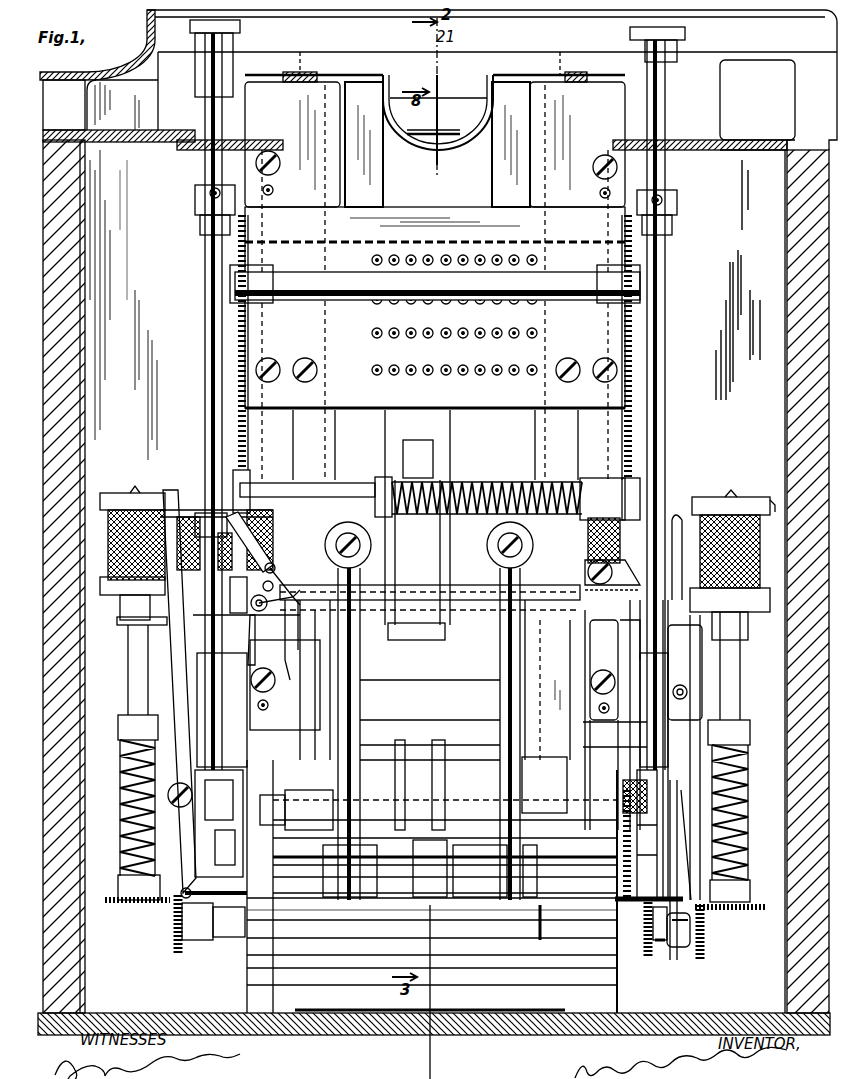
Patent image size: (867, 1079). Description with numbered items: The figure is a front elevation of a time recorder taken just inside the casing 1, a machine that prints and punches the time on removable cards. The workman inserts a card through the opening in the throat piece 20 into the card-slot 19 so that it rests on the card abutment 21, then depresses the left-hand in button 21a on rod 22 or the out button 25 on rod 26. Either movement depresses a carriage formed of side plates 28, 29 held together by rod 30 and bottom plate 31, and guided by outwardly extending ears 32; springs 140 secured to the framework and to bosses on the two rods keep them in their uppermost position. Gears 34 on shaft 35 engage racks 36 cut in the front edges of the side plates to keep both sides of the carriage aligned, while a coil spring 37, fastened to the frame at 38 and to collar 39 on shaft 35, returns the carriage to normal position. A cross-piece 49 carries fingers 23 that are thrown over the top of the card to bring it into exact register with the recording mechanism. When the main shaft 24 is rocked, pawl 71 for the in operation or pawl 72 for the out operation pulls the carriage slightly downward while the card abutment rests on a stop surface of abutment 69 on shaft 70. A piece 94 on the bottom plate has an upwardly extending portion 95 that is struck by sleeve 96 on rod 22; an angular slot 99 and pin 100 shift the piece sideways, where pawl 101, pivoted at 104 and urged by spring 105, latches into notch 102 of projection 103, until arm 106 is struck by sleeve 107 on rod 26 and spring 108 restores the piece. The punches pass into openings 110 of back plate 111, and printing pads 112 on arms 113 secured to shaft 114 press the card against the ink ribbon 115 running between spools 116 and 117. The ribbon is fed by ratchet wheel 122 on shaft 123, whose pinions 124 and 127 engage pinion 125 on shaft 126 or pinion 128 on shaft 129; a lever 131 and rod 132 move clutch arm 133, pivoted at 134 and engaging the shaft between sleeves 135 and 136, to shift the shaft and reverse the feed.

The casing 1 is at (86, 312).
The card-slot 19 is at (448, 137).
The throat piece 20 is at (352, 75).
The card abutment 21 is at (436, 470).
The in button 21a is at (242, 28).
The rod 22 is at (204, 165).
The fingers 23 is at (367, 160).
The main shaft 24 is at (448, 725).
The out button 25 is at (630, 33).
The rod 26 is at (662, 120).
The side plate 28 is at (635, 418).
The side plate 29 is at (238, 427).
The rod 30 is at (362, 300).
The bottom plate 31 is at (302, 612).
The ears 32 is at (205, 228).
The gears 34 is at (252, 490).
The shaft 35 is at (345, 490).
The racks 36 is at (238, 385).
The coil spring 37 is at (470, 482).
The frame attachment point 38 is at (595, 478).
The collar 39 is at (385, 478).
The cross-piece 49 is at (433, 217).
The abutment 69 is at (418, 781).
The shaft 70 is at (314, 808).
The pawl 71 is at (702, 640).
The pawl 72 is at (702, 666).
The piece 94 is at (297, 590).
The upwardly extending portion 95 is at (275, 556).
The sleeve 96 is at (205, 492).
The angular slot 99 is at (275, 683).
The pin 100 is at (265, 612).
The pawl 101 is at (618, 620).
The notch 102 is at (596, 562).
The projection 103 is at (720, 500).
The pivot 104 is at (742, 612).
The spring 105 is at (582, 614).
The arm 106 is at (598, 535).
The sleeve 107 is at (700, 490).
The spring 108 is at (292, 640).
The openings 110 is at (535, 335).
The back plate 111 is at (505, 400).
The printing pads 112 is at (360, 532).
The arms 113 is at (362, 694).
The shaft 114 is at (470, 873).
The ink ribbon 115 is at (120, 620).
The spool 116 is at (780, 506).
The spool 117 is at (113, 494).
The ratchet wheel 122 is at (645, 957).
The shaft 123 is at (378, 928).
The pinion 124 is at (705, 945).
The pinion 125 is at (745, 910).
The shaft 126 is at (742, 708).
The pinion 127 is at (174, 930).
The pinion 128 is at (118, 904).
The shaft 129 is at (128, 660).
The lever 131 is at (170, 690).
The rod 132 is at (540, 905).
The clutch arm 133 is at (686, 940).
The pivot 134 is at (742, 805).
The sleeve 135 is at (662, 957).
The sleeve 136 is at (676, 948).
The springs 140 is at (212, 232).